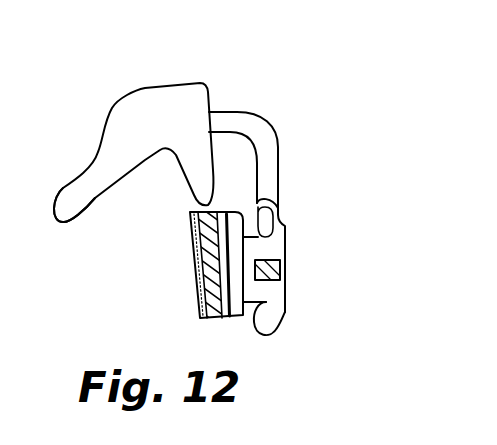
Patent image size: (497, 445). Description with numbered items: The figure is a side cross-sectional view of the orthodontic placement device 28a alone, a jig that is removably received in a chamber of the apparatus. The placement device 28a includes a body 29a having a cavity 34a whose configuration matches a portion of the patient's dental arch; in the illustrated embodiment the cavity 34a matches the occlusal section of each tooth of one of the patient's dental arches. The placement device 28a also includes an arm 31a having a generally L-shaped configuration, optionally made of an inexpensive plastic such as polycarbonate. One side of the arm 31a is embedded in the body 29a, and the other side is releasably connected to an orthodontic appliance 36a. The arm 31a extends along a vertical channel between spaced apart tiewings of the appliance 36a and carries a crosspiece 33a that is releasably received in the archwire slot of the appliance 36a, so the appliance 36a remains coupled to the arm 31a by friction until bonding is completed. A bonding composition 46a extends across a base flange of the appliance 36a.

The orthodontic placement device 28a is at (283, 66).
The body 29a is at (170, 91).
The arm 31a is at (281, 150).
The crosspiece 33a is at (290, 260).
The cavity 34a is at (108, 192).
The orthodontic appliance 36a is at (282, 320).
The bonding composition 46a is at (196, 300).